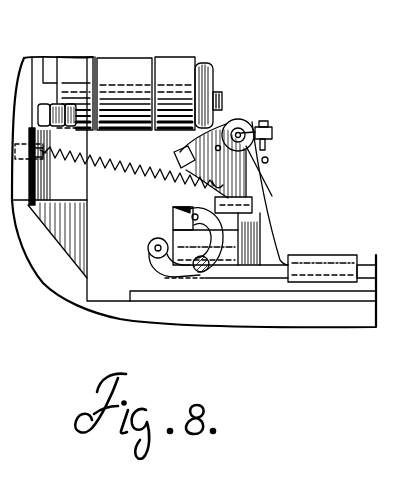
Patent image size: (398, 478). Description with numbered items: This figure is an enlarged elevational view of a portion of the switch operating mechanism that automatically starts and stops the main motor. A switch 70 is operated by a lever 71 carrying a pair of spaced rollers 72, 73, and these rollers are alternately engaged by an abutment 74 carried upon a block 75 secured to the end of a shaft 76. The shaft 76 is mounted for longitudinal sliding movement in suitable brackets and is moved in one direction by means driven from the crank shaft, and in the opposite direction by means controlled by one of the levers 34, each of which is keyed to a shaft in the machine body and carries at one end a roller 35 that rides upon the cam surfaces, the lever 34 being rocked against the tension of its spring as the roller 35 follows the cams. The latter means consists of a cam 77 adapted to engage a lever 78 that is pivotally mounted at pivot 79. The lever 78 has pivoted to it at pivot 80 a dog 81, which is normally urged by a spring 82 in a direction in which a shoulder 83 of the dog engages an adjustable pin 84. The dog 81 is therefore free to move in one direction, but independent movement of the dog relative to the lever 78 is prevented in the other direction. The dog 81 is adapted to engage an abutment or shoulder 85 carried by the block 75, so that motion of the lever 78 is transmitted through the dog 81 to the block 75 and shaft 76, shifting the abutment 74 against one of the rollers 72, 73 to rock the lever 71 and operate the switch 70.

The roller 35 is at (106, 66).
The lever 34 is at (167, 66).
The cam 77 is at (214, 78).
The lever 78 is at (223, 127).
The pivot 79 is at (268, 121).
The pivot 80 is at (205, 141).
The dog 81 is at (248, 182).
The spring 82 is at (126, 179).
The shoulder 83 is at (146, 169).
The adjustable pin 84 is at (176, 157).
The abutment or shoulder 85 is at (255, 197).
The block 75 is at (185, 240).
The shaft 76 is at (365, 263).
The roller 73 is at (178, 207).
The abutment 74 is at (173, 219).
The roller 72 is at (150, 246).
The lever 71 is at (163, 263).
The switch 70 is at (201, 272).